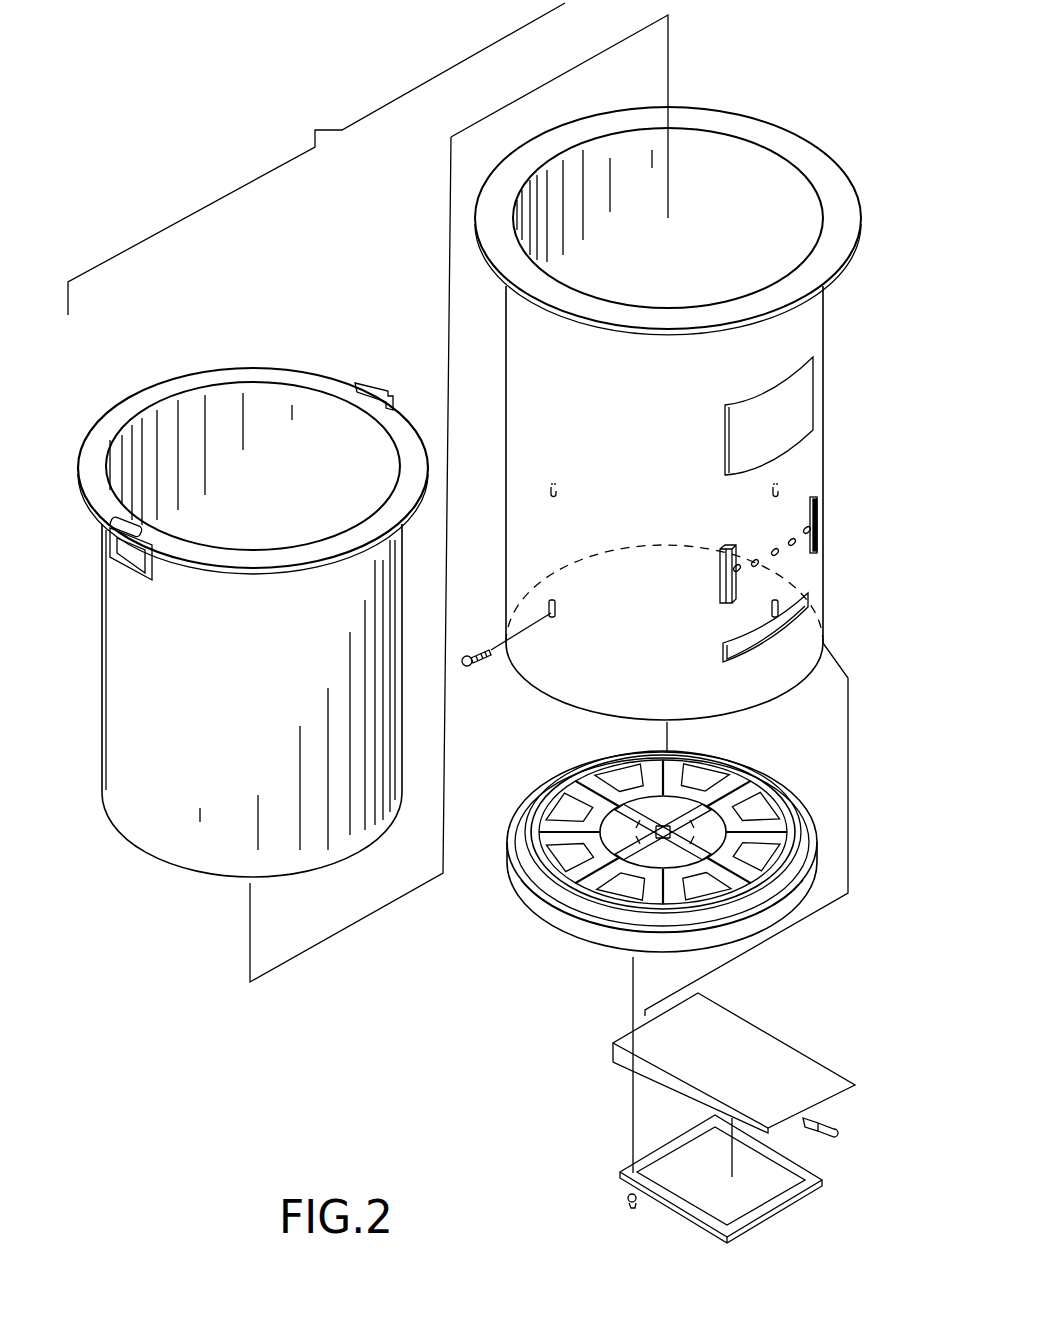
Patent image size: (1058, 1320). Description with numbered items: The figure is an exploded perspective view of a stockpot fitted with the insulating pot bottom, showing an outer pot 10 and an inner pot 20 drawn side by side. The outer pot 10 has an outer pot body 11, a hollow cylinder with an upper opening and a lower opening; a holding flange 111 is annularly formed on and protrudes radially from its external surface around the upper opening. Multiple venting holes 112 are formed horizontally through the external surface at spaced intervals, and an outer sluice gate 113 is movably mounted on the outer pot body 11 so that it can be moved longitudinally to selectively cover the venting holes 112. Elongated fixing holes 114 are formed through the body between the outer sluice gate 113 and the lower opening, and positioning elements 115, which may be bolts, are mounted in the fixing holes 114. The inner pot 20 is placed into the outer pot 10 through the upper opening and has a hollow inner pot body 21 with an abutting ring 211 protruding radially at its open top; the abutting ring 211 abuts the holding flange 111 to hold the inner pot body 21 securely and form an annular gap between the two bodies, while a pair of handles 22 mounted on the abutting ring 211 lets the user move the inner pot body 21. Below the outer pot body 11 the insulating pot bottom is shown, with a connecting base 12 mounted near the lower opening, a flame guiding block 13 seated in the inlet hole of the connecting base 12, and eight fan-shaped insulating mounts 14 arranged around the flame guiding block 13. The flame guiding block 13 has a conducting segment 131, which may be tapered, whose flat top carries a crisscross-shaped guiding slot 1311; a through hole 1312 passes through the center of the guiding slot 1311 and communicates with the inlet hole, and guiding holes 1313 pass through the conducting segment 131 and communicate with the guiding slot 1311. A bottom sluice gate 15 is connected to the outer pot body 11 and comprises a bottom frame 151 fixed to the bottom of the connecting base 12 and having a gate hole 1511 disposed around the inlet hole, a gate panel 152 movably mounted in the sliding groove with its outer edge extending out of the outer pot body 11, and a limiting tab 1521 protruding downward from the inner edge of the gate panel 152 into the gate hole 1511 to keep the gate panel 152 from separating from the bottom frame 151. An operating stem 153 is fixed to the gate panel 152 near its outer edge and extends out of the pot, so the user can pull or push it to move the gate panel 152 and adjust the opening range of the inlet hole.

The outer pot 10 is at (502, 938).
The outer pot body 11 is at (737, 115).
The holding flange 111 is at (805, 168).
The venting holes 112 is at (770, 548).
The outer sluice gate 113 is at (720, 582).
The fixing holes 114 is at (783, 603).
The positioning elements 115 is at (484, 665).
The connecting base 12 is at (515, 900).
The flame guiding block 13 is at (590, 828).
The conducting segment 131 is at (610, 840).
The guiding slot 1311 is at (707, 803).
The through hole 1312 is at (653, 827).
The guiding holes 1313 is at (627, 813).
The insulating mounts 14 is at (608, 900).
The bottom sluice gate 15 is at (575, 1088).
The bottom frame 151 is at (618, 1172).
The gate hole 1511 is at (718, 1158).
The gate panel 152 is at (782, 1052).
The limiting tab 1521 is at (610, 1050).
The operating stem 153 is at (818, 1127).
The inner pot 20 is at (142, 863).
The inner pot body 21 is at (228, 865).
The abutting ring 211 is at (255, 372).
The handles 22 is at (139, 582).